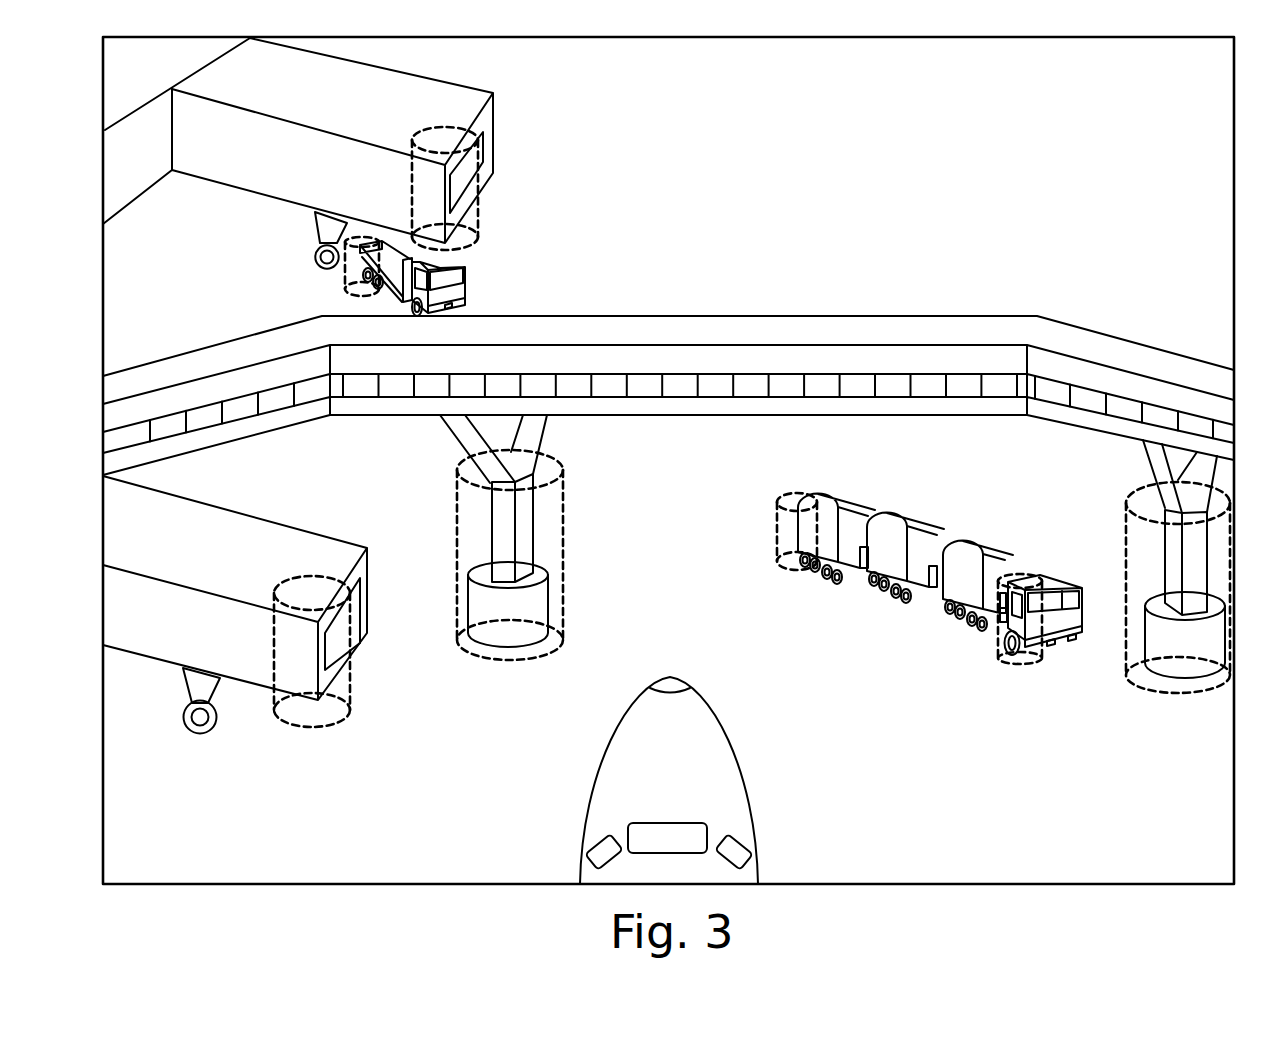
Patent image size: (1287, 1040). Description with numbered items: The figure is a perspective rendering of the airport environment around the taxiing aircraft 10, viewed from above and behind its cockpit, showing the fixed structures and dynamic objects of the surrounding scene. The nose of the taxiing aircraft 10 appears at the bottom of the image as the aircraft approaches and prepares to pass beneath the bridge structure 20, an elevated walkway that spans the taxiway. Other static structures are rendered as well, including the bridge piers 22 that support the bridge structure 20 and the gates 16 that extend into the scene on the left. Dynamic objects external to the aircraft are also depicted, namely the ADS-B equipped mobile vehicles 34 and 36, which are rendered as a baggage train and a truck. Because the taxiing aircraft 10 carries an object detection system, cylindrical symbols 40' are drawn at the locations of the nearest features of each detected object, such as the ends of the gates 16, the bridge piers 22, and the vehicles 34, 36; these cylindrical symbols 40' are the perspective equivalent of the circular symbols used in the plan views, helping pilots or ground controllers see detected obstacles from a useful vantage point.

The taxiing aircraft 10 is at (687, 740).
The gates 16 is at (495, 123).
The bridge structure 20 is at (817, 317).
The bridge piers 22 is at (540, 432).
The ADS-B equipped mobile vehicle 34 is at (1062, 585).
The ADS-B equipped mobile vehicle 36 is at (468, 274).
The cylindrical symbols 40' is at (732, 440).